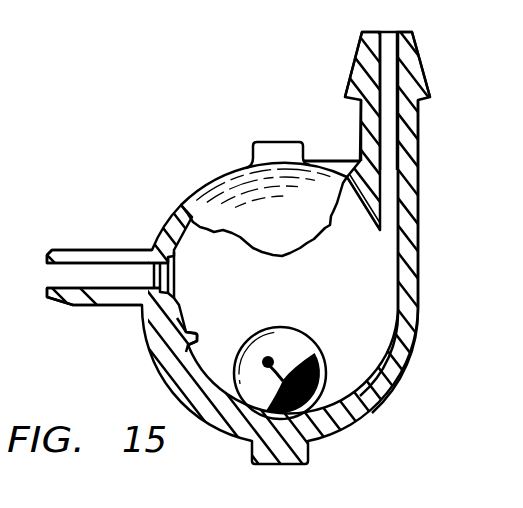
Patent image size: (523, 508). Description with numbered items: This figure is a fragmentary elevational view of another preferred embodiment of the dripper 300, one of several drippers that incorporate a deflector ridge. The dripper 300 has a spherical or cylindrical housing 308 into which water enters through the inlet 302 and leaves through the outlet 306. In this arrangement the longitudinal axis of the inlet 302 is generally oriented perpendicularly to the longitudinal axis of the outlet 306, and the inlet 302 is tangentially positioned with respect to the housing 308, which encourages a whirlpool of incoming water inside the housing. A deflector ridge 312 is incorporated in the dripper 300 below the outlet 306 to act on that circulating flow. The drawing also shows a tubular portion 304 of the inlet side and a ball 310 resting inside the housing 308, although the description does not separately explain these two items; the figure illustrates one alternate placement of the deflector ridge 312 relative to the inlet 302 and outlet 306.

The dripper 300 is at (246, 68).
The inlet 302 is at (420, 60).
The inlet tube shaft 304 is at (424, 104).
The outlet 306 is at (84, 250).
The spherical or cylindrical housing 308 is at (408, 290).
The ball 310 is at (300, 330).
The deflector ridge 312 is at (188, 333).